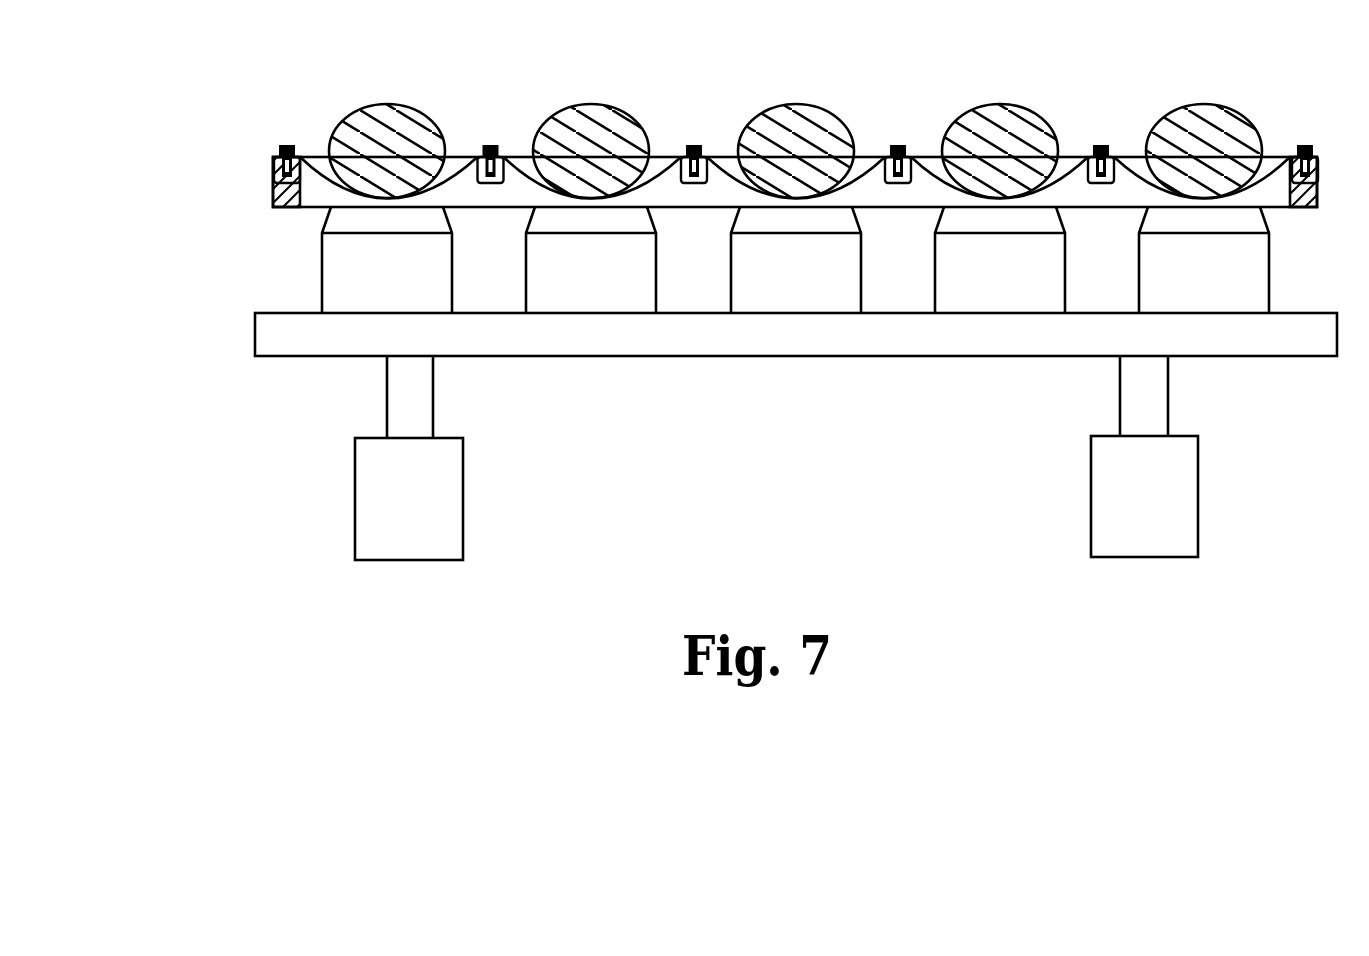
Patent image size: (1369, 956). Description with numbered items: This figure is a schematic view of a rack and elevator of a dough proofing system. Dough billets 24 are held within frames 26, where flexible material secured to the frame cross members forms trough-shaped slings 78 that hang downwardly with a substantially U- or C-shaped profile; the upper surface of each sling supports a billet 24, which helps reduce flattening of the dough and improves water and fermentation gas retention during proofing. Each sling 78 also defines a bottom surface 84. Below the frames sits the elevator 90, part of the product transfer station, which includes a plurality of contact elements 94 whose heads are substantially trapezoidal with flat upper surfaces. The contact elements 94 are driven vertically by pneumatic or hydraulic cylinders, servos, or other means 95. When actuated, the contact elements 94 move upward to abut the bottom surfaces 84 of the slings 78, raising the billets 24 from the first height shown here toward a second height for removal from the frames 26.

The billet 24 is at (600, 138).
The frame 26 is at (1095, 120).
The sling 78 is at (653, 180).
The bottom surface 84 is at (455, 180).
The elevator 90 is at (195, 293).
The contact element 94 is at (310, 268).
The means for vertically actuating the contact elements 95 is at (323, 477).